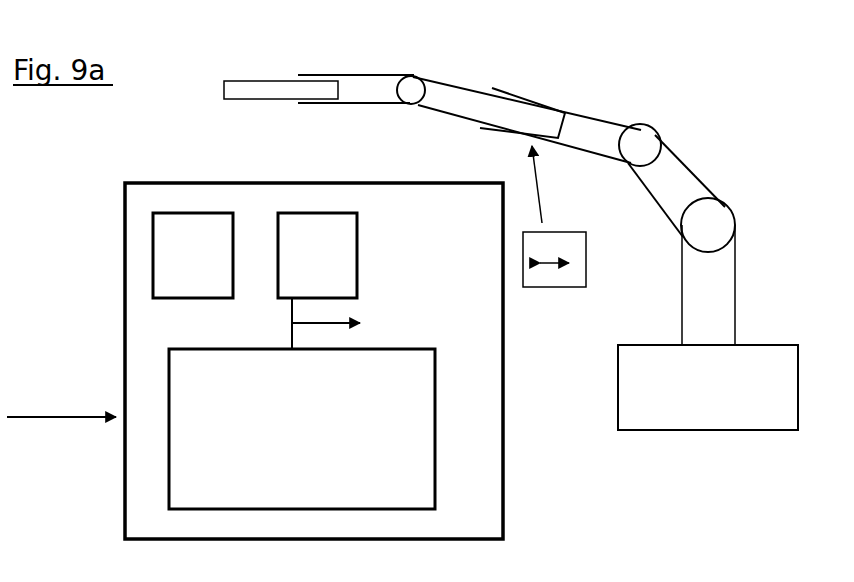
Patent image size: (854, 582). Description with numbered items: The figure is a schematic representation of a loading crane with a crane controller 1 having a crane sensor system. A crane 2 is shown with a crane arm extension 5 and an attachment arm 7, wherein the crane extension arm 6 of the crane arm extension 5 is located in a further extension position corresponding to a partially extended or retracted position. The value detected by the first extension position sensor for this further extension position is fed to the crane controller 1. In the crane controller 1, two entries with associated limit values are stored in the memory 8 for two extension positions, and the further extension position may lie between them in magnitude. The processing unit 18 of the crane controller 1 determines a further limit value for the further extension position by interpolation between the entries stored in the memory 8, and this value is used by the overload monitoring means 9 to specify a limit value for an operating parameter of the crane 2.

The crane controller 1 is at (100, 250).
The crane 2 is at (678, 87).
The crane arm extension 5 is at (557, 85).
The crane extension arm 6 is at (442, 97).
The attachment arm 7 is at (293, 119).
The memory 8 is at (265, 392).
The overload monitoring means 9 is at (205, 269).
The processing unit 18 is at (330, 269).